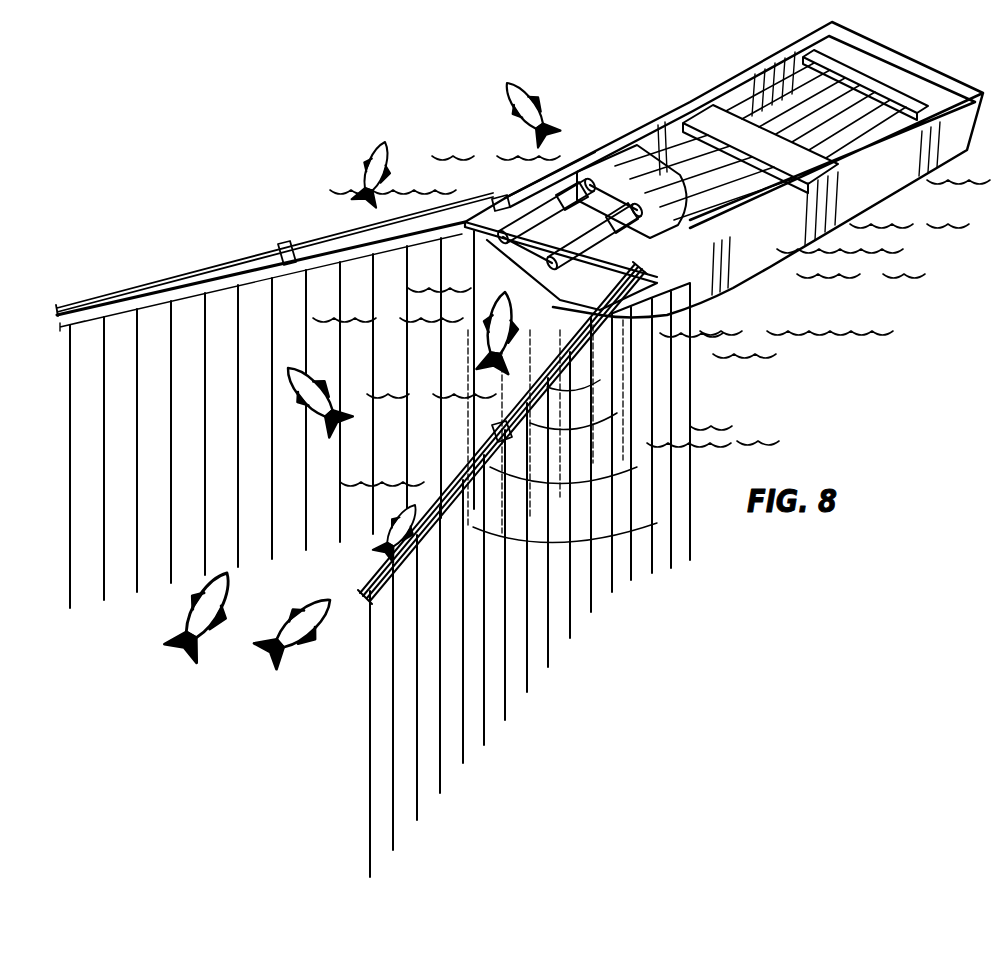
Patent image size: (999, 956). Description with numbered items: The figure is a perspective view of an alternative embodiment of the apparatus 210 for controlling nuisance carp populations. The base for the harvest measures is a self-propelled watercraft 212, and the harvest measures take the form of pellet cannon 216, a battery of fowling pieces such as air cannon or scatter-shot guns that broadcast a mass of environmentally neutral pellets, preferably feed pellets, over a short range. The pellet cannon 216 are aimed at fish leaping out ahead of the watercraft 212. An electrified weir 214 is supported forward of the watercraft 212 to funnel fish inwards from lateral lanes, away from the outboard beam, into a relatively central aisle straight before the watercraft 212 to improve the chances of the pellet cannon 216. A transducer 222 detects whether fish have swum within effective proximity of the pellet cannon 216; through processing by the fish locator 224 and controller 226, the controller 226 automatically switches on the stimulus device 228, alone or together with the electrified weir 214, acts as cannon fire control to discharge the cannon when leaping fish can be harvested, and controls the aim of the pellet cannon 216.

The apparatus 210 is at (340, 217).
The watercraft 212 is at (880, 192).
The electrified weir 214 is at (483, 715).
The pellet cannon 216 is at (733, 288).
The transducer 222 is at (602, 378).
The fish locator 224 is at (628, 183).
The controller 226 is at (546, 211).
The stimulus device 228 is at (594, 236).